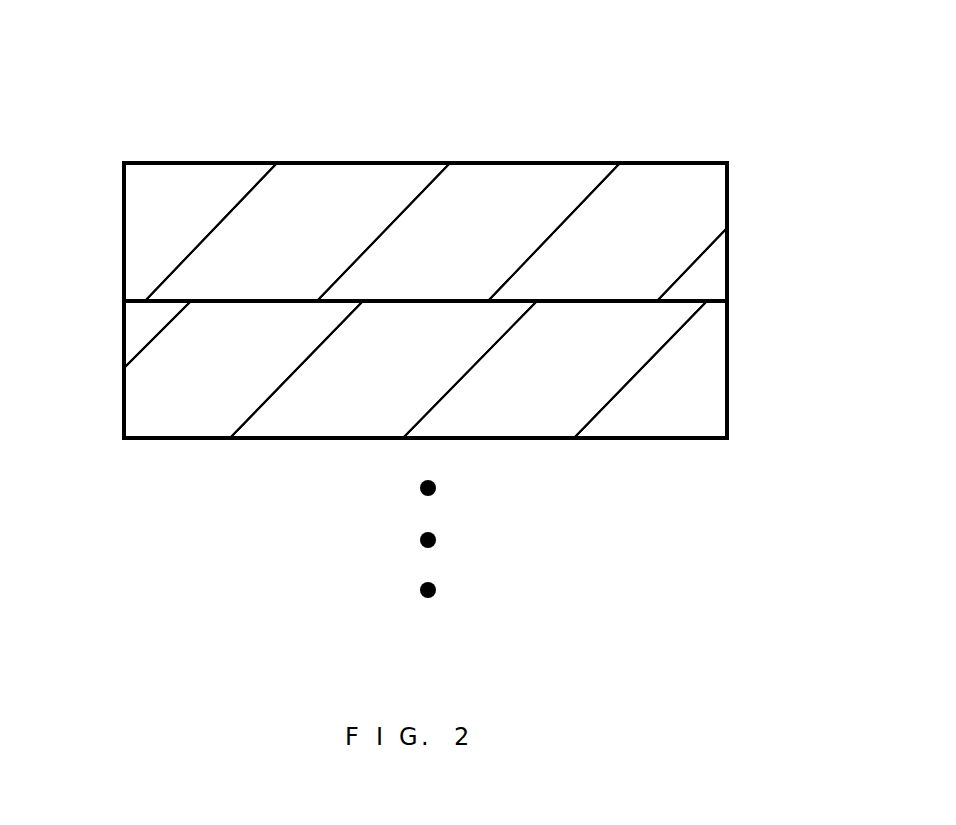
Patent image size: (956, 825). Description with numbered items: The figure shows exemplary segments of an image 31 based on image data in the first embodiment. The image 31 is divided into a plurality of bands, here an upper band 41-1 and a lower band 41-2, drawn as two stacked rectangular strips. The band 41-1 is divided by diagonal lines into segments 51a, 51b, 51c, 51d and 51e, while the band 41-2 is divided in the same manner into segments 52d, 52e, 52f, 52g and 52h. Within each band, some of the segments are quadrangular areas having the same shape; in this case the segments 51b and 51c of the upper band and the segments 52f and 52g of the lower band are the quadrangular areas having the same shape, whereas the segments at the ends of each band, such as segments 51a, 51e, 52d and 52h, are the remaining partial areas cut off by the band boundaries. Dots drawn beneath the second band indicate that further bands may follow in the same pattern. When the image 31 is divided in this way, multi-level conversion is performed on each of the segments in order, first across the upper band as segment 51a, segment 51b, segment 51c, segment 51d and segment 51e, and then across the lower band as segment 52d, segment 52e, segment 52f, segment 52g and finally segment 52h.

The imaging device / pixel array 31 is at (741, 83).
The band 41-1 is at (729, 204).
The band 41-2 is at (729, 353).
The segment 51a is at (173, 201).
The segment 51b is at (332, 201).
The segment 51c is at (488, 202).
The segment 51d is at (645, 201).
The segment 51e is at (704, 280).
The segment 52d is at (148, 323).
The segment 52e is at (192, 403).
The segment 52f is at (349, 403).
The segment 52g is at (505, 403).
The segment 52h is at (662, 403).